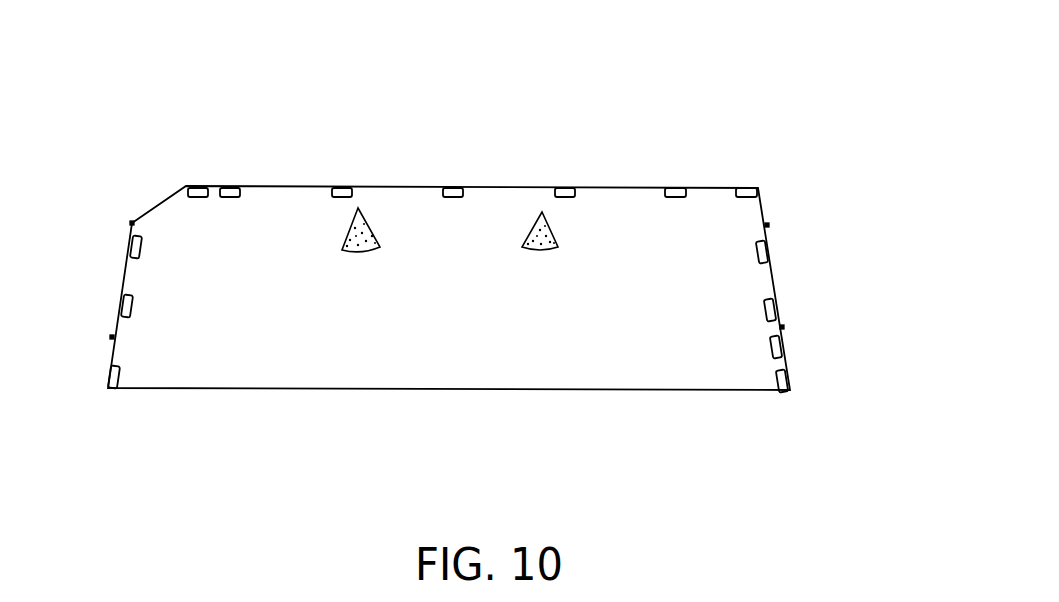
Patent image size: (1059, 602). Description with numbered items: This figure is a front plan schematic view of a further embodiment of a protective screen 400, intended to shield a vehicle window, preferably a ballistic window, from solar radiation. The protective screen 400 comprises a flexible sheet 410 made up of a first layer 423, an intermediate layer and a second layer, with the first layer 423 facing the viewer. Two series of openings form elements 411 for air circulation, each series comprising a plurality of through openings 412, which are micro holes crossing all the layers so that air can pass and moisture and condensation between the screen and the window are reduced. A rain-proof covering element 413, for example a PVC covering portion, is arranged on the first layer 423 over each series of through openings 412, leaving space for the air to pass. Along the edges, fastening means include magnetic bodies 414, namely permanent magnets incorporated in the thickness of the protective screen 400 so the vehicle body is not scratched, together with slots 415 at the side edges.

The protective screen 400 is at (227, 147).
The flexible sheet 410 is at (302, 233).
The element for air circulation 411 is at (368, 278).
The through openings 412 is at (360, 255).
The rain-proof covering element 413 is at (362, 213).
The magnetic bodies 414 is at (123, 290).
The slots 415 is at (112, 337).
The first layer 423 is at (650, 288).